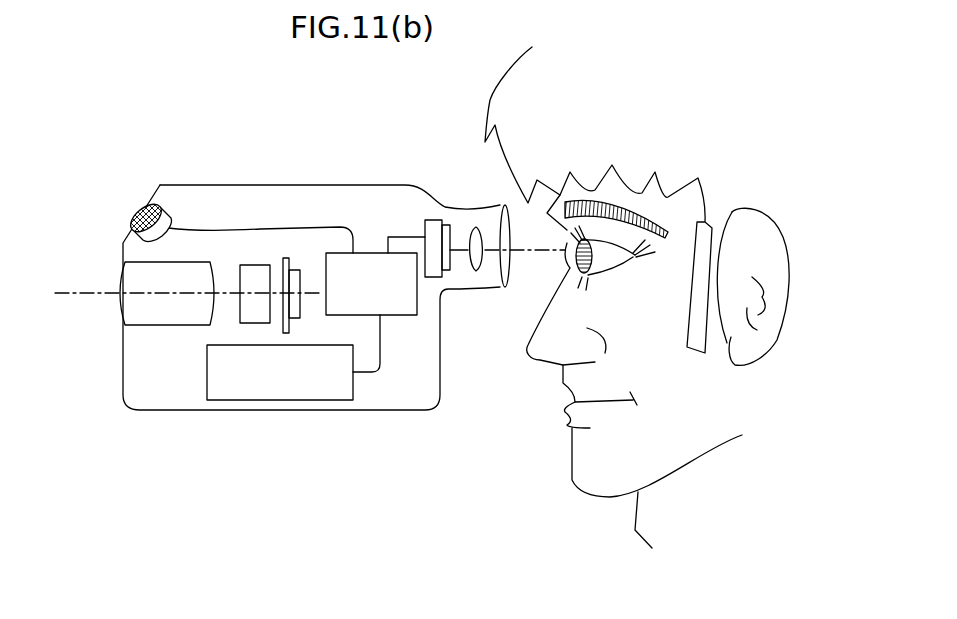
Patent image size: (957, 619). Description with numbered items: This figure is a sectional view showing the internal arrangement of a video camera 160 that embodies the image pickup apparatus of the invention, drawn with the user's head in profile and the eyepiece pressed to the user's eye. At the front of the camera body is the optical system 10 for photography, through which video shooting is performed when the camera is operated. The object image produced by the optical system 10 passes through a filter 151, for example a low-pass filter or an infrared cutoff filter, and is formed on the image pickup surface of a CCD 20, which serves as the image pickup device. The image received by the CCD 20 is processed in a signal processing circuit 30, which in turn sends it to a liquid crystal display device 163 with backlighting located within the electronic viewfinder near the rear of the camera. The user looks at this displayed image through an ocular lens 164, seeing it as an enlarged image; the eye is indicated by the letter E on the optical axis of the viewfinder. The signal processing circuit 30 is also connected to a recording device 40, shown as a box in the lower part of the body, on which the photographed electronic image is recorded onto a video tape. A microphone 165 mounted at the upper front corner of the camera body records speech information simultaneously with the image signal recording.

The optical system for photography 10 is at (130, 305).
The CCD 20 is at (290, 258).
The signal processing circuit 30 is at (409, 321).
The recording device 40 is at (297, 396).
The filter 151 is at (252, 267).
The video camera 160 is at (378, 428).
The liquid crystal display device with backlighting 163 is at (433, 220).
The ocular lens 164 is at (477, 271).
The microphone 165 is at (136, 210).
The eye E is at (580, 263).